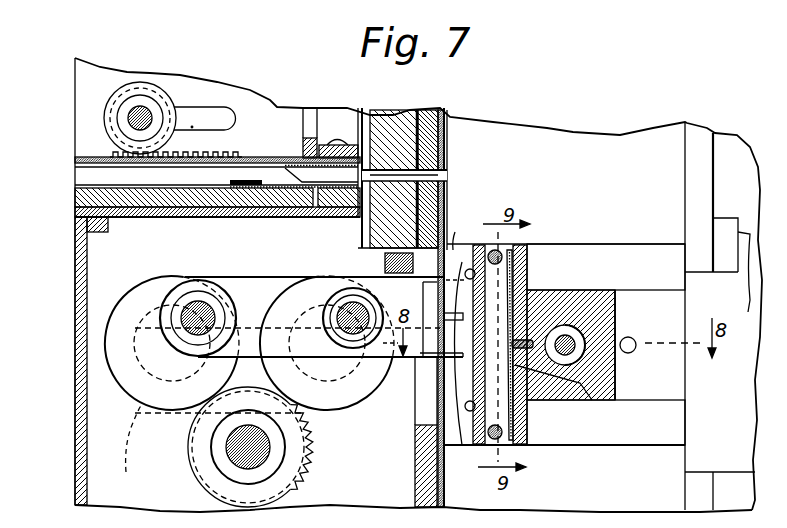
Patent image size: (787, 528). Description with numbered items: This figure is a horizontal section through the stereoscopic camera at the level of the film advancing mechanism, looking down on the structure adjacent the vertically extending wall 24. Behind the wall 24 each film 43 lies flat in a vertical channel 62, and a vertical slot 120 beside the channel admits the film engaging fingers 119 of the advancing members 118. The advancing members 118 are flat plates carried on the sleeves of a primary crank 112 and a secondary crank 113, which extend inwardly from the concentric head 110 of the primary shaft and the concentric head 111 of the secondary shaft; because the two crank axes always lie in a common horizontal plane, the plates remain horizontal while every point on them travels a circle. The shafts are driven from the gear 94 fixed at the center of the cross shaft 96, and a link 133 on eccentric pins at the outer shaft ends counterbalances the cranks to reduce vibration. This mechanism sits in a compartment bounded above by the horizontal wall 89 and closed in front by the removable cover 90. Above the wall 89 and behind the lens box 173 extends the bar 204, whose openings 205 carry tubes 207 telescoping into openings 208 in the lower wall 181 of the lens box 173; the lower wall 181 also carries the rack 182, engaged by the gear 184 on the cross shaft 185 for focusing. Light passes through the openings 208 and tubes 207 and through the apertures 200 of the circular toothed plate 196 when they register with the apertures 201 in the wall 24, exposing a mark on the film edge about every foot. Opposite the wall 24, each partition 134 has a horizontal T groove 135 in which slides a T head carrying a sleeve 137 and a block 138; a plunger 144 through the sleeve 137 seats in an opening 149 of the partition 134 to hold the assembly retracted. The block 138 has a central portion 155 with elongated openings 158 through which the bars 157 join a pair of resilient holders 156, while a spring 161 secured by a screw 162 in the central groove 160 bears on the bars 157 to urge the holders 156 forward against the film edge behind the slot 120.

The lens box 173 is at (112, 80).
The gear 184 is at (118, 95).
The cross shaft 185 is at (130, 121).
The rack 182 is at (207, 150).
The opening 208 is at (76, 166).
The lower wall 181 is at (77, 194).
The tube 207 is at (265, 170).
The opening 205 is at (333, 191).
The horizontal wall 89 is at (157, 218).
The removable cover 90 is at (84, 252).
The bar 204 is at (327, 143).
The circular toothed plate 196 is at (408, 111).
The vertically extending wall 24 is at (430, 130).
The vertical channel 62 is at (448, 117).
The film 43 is at (446, 135).
The aperture 200 is at (442, 188).
The aperture 201 is at (446, 171).
The advancing member 118 is at (276, 279).
The secondary crank 113 is at (200, 305).
The primary crank 112 is at (345, 305).
The concentric head 111 is at (131, 385).
The concentric head 110 is at (358, 393).
The gear 94 is at (302, 466).
The cross shaft 96 is at (236, 452).
The link 133 is at (131, 449).
The film engaging finger 119 is at (452, 359).
The vertical slot 120 is at (423, 412).
The resilient holder 156 is at (455, 250).
The bar 157 is at (490, 243).
The elongated opening 158 is at (504, 258).
The central portion 155 is at (513, 280).
The central groove 160 is at (532, 270).
The partition 134 is at (647, 254).
The block 138 is at (605, 293).
The screw 162 is at (595, 401).
The sleeve 137 is at (572, 332).
The plunger 144 is at (572, 343).
The spring 161 is at (527, 408).
The opening 149 is at (634, 351).
The T groove 135 is at (680, 290).